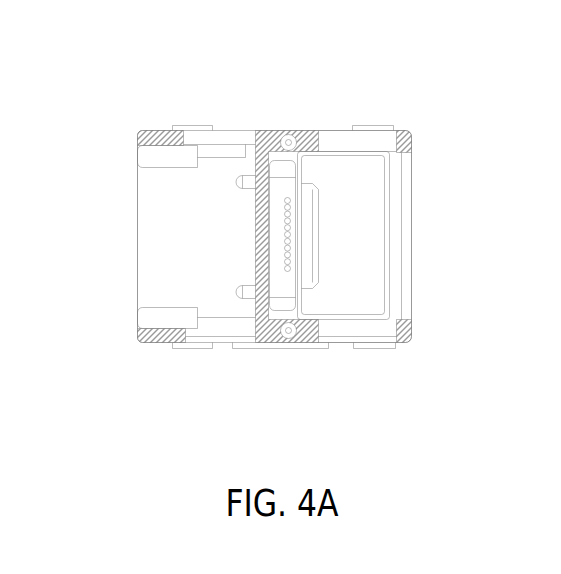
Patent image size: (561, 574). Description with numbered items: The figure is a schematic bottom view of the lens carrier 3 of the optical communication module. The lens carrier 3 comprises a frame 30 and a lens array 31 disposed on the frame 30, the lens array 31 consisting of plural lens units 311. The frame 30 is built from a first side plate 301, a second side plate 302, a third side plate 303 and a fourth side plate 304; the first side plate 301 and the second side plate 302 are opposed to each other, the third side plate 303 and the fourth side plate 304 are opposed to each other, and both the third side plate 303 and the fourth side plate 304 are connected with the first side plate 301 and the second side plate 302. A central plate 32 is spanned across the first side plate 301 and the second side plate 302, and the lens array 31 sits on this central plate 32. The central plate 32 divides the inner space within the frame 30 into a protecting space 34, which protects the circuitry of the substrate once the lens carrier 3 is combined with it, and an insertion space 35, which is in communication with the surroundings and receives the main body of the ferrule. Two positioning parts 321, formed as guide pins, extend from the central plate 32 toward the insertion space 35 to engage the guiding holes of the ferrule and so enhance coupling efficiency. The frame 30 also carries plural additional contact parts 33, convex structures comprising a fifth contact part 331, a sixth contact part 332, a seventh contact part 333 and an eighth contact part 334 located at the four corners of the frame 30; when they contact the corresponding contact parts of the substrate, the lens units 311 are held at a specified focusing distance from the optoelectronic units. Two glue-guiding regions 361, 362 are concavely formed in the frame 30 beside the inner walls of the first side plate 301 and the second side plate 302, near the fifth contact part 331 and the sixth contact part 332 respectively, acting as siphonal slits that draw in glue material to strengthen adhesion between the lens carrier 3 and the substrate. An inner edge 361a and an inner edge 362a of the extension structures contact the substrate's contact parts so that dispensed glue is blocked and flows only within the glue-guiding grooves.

The lens carrier 3 is at (518, 130).
The frame 30 is at (288, 128).
The first side plate 301 is at (336, 130).
The second side plate 302 is at (342, 343).
The third side plate 303 is at (411, 252).
The fourth side plate 304 is at (137, 317).
The lens array 31 is at (293, 233).
The lens units 311 is at (293, 198).
The central plate 32 is at (257, 143).
The positioning parts 321 is at (248, 183).
The additional contact parts 33 is at (134, 145).
The fifth contact part 331 is at (135, 134).
The sixth contact part 332 is at (158, 343).
The seventh contact part 333 is at (411, 323).
The eighth contact part 334 is at (410, 140).
The protecting space 34 is at (365, 293).
The insertion space 35 is at (152, 217).
The glue-guiding region 361 is at (205, 142).
The inner edge 361a is at (245, 155).
The glue-guiding region 362 is at (208, 330).
The inner edge 362a is at (224, 318).